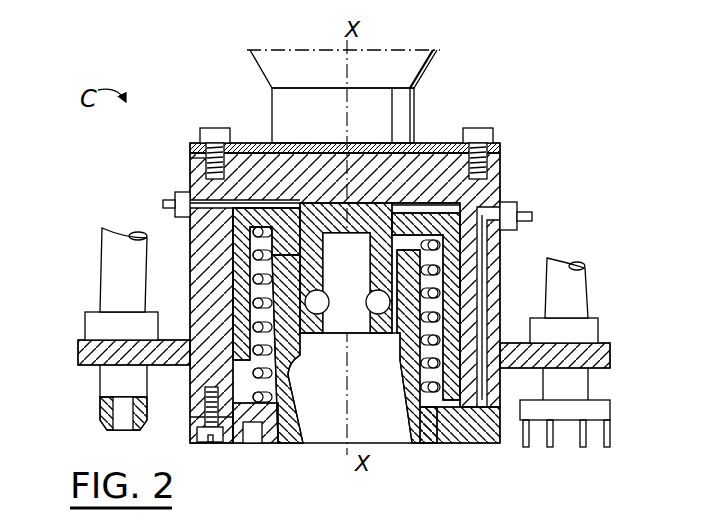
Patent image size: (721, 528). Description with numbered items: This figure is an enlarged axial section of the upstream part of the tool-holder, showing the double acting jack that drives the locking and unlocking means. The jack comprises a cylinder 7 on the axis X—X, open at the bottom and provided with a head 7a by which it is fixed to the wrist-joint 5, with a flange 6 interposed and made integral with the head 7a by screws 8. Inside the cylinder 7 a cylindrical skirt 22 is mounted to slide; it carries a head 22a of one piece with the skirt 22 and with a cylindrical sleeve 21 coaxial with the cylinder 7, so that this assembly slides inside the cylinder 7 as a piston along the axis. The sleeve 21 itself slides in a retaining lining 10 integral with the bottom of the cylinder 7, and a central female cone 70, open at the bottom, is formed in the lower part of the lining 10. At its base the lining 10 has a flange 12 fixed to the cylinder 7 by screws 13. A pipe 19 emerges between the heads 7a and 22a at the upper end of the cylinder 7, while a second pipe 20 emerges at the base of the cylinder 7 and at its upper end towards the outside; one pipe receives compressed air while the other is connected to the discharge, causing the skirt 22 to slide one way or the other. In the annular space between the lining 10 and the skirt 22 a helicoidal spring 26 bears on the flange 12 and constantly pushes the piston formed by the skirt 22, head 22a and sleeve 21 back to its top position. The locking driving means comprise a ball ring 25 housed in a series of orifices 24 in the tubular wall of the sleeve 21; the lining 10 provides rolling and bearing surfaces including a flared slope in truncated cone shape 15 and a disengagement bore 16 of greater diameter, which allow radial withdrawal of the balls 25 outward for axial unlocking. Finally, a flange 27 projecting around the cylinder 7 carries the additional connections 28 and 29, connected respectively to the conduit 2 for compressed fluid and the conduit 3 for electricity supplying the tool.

The conduit 2 is at (115, 275).
The conduit 3 is at (575, 298).
The wrist-joint 5 is at (343, 96).
The flange 6 is at (258, 146).
The cylinder 7 is at (205, 270).
The head 7a is at (420, 175).
The screws 8 is at (215, 135).
The retaining lining 10 is at (400, 355).
The flange 12 is at (470, 445).
The screws 13 is at (205, 395).
The flared slope in truncated cone shape 15 is at (294, 350).
The disengagement bore 16 is at (303, 445).
The pipe 19 is at (195, 167).
The pipe 20 is at (482, 252).
The cylindrical sleeve 21 is at (318, 250).
The cylindrical skirt 22 is at (203, 242).
The head 22a is at (383, 207).
The orifices 24 is at (383, 297).
The ball ring 25 is at (374, 306).
The helicoidal spring 26 is at (252, 445).
The flange 27 is at (95, 352).
The additional connection 28 is at (100, 407).
The additional connection 29 is at (610, 412).
The central female cone 70 is at (400, 482).